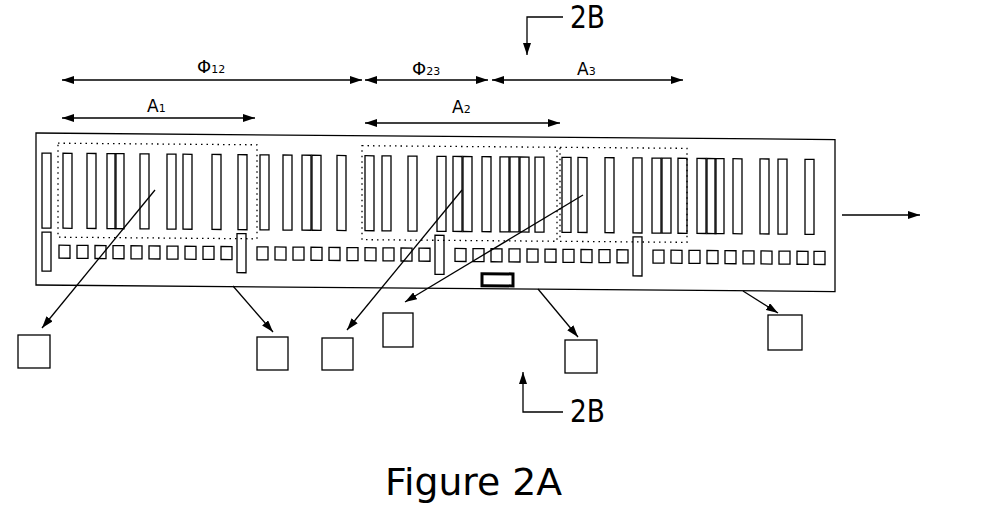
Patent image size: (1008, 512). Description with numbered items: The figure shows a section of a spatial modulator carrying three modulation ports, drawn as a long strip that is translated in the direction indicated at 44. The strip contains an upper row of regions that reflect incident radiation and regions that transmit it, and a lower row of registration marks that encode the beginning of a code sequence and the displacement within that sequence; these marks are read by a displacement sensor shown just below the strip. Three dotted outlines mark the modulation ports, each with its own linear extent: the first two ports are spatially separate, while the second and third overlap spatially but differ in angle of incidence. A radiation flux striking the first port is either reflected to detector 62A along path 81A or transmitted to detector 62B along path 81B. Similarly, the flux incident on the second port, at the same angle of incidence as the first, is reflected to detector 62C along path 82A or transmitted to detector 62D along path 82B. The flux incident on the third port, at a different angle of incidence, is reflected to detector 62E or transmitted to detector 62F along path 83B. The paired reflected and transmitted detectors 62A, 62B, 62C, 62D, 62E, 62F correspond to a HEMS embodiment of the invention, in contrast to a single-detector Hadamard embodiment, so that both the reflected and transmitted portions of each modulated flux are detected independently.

The translation direction 44 is at (881, 230).
The path 81A is at (60, 307).
The path 81B is at (249, 305).
The path 82A is at (366, 305).
The path 82B is at (556, 311).
The path 83B is at (425, 295).
The detector 62A is at (51, 351).
The detector 62B is at (256, 352).
The detector 62C is at (354, 358).
The detector 62D is at (598, 365).
The detector 62E is at (414, 335).
The detector 62F is at (803, 335).